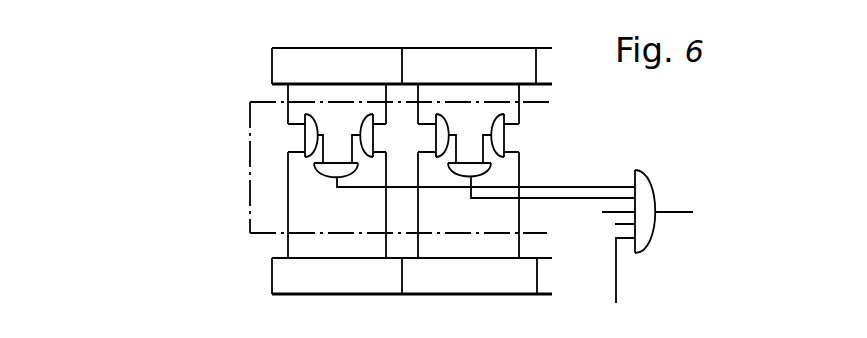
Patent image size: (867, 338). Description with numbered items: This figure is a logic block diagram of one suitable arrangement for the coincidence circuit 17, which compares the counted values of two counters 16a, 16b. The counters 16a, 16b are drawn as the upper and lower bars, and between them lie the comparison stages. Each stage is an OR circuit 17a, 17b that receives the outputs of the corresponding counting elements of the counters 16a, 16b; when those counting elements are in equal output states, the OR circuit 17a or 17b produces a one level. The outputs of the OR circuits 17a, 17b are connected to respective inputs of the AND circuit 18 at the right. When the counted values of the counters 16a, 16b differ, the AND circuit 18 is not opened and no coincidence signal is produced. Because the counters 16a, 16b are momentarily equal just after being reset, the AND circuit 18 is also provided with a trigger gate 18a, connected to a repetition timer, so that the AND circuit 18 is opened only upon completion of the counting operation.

The upper shift register / bus bar 16a is at (332, 54).
The lower shift register / bus bar 16b is at (344, 283).
The coincidence circuit 17 is at (250, 180).
The first AND gate of coincidence circuit 17a is at (326, 179).
The second AND gate of coincidence circuit 17b is at (463, 177).
The AND gate 18 is at (652, 181).
The input line of AND gate 18 18a is at (616, 283).